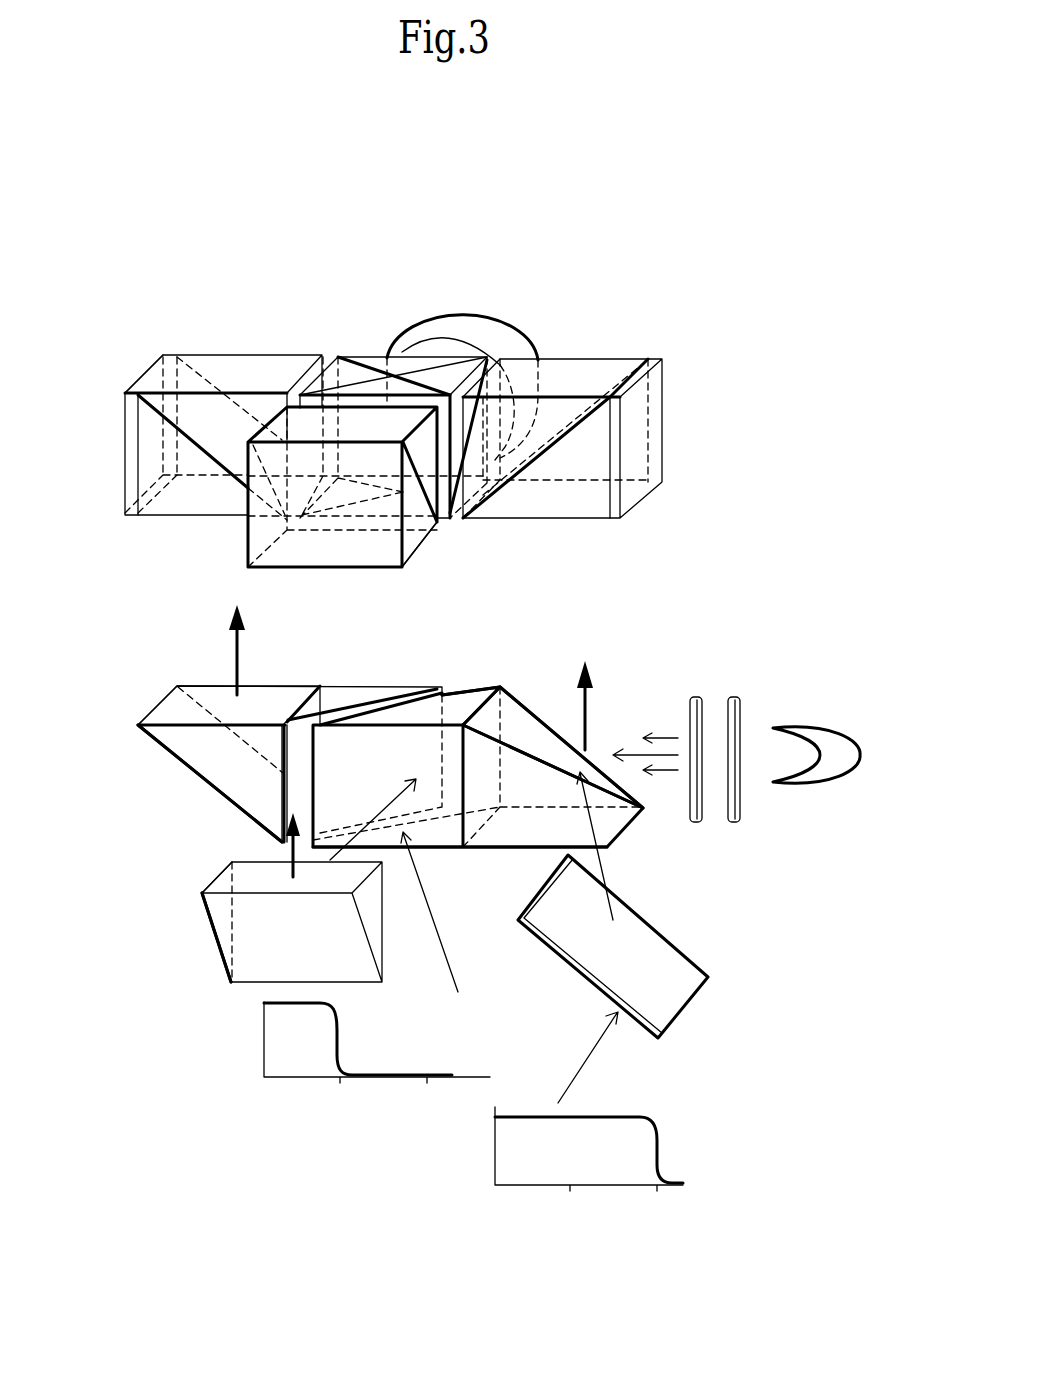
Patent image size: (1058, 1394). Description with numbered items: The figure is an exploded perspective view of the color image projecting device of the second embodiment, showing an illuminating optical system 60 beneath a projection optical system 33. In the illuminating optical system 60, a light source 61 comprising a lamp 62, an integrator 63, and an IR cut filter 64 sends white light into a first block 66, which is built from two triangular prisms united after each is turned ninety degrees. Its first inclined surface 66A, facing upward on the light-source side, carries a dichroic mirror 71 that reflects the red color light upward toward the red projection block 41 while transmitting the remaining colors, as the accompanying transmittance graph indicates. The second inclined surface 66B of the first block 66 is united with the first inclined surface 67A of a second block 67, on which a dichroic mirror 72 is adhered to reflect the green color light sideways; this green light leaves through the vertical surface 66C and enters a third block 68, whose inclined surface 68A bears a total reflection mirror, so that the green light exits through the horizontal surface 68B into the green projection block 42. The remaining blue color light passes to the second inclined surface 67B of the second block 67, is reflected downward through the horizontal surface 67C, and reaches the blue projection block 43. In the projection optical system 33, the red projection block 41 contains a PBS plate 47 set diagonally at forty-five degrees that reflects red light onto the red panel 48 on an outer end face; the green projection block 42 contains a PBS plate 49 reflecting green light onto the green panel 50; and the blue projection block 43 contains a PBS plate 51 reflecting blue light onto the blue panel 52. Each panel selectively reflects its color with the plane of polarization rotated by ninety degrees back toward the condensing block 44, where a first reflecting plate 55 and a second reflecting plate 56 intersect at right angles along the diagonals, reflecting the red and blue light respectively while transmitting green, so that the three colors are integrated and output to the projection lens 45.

The projection optical system 33 is at (696, 258).
The red projection block 41 is at (618, 360).
The green projection block 42 is at (250, 533).
The blue projection block 43 is at (232, 355).
The condensing block 44 is at (372, 355).
The projection lens 45 is at (510, 303).
The PBS plate 47 is at (560, 423).
The red panel 48 is at (665, 410).
The PBS plate 49 is at (427, 533).
The green panel 50 is at (250, 545).
The PBS plate 51 is at (177, 433).
The blue panel 52 is at (142, 375).
The first reflecting plate 55 is at (390, 370).
The second reflecting plate 56 is at (447, 308).
The illuminating optical system 60 is at (660, 652).
The light source 61 is at (782, 685).
The lamp 62 is at (813, 782).
The integrator 63 is at (735, 822).
The IR cut filter 64 is at (697, 822).
The first block 66 is at (507, 688).
The first inclined surface 66A is at (547, 725).
The second inclined surface 66B is at (500, 687).
The vertical surface 66C is at (443, 837).
The second block 67 is at (287, 683).
The first inclined surface 67A is at (395, 688).
The second inclined surface 67B is at (182, 757).
The horizontal surface 67C is at (170, 703).
The third block 68 is at (220, 883).
The inclined surface 68A is at (220, 930).
The horizontal surface 68B is at (203, 880).
The dichroic mirror 71 is at (663, 950).
The dichroic mirror 72 is at (302, 730).